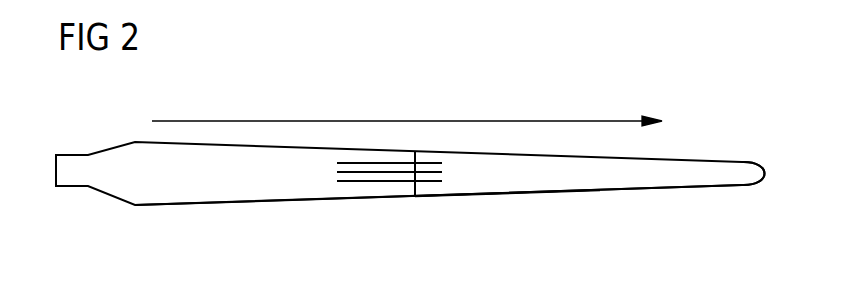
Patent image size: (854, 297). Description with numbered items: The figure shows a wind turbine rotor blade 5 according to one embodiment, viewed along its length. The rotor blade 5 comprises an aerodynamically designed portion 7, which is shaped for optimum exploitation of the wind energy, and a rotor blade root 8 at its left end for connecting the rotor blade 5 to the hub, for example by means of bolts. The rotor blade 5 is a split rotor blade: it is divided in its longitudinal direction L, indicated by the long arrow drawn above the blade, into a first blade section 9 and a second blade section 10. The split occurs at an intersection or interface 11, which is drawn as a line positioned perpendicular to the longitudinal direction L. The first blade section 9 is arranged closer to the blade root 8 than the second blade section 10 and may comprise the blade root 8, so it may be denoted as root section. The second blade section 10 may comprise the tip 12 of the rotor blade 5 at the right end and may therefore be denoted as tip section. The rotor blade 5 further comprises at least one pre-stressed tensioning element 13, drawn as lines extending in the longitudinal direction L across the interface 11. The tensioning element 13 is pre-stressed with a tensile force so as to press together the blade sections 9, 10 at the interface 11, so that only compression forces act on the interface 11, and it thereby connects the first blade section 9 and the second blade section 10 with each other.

The rotor blade 5 is at (322, 90).
The aerodynamically designed portion 7 is at (600, 205).
The rotor blade root 8 is at (73, 163).
The first blade section 9 is at (182, 200).
The second blade section 10 is at (502, 185).
The interface 11 is at (420, 189).
The tip 12 is at (743, 168).
The pre-stressed tensioning element 13 is at (353, 182).
The longitudinal direction L is at (445, 120).